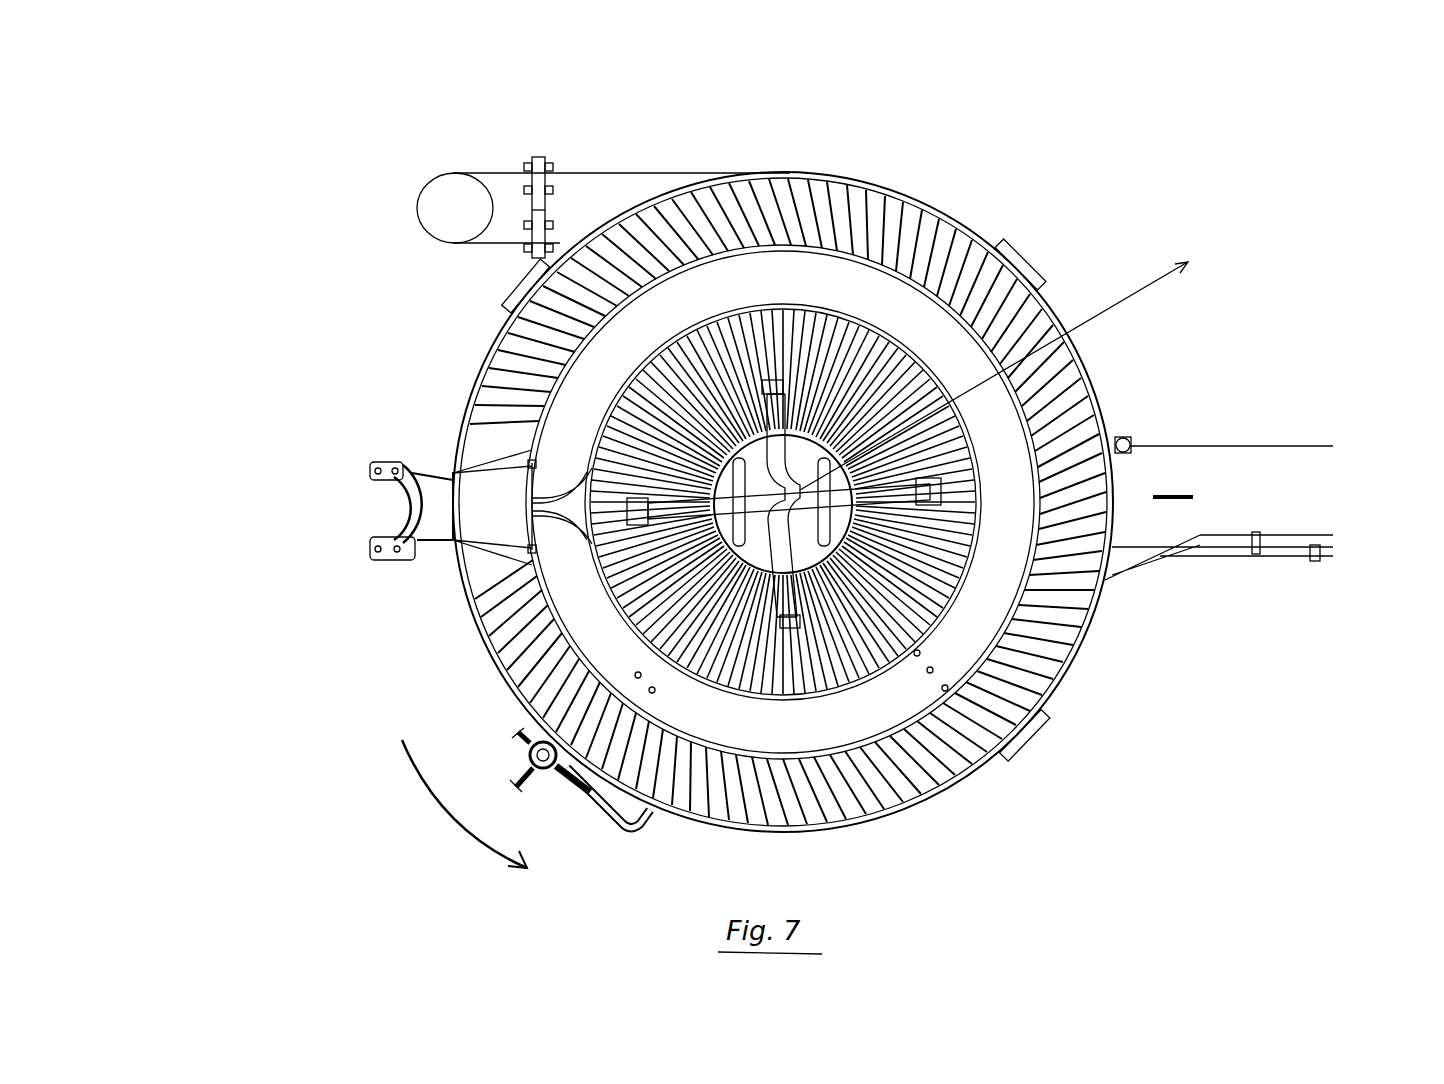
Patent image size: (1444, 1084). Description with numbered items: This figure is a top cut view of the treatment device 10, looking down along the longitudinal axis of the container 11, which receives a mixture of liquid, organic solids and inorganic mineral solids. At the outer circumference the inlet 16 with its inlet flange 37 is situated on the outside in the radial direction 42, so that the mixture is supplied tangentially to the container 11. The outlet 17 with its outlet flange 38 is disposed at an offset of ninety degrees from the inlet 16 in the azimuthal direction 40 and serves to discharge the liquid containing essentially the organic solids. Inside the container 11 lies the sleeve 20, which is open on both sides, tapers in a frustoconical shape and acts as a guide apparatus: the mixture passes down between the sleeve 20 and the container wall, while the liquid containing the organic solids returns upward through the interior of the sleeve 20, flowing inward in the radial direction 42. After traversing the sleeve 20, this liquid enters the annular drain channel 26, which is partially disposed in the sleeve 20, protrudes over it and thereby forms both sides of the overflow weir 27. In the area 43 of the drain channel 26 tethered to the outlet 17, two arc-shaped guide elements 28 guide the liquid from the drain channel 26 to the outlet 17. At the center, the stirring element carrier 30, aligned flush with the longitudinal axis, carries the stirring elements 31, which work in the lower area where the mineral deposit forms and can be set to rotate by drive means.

The treatment device 10 is at (1055, 178).
The container 11 is at (840, 160).
The inlet 16 is at (560, 133).
The outlet 17 is at (365, 580).
The sleeve 20 is at (520, 345).
The drain channel 26 is at (972, 625).
The overflow weir 27 is at (835, 493).
The arc-shaped guide elements 28 is at (532, 505).
The stirring element carrier 30 is at (785, 512).
The stirring elements 31 is at (855, 510).
The inlet flange 37 is at (502, 183).
The outlet flange 38 is at (430, 468).
The azimuthal direction 40 is at (440, 822).
The radial direction 42 is at (1127, 298).
The area of drain channel 43 is at (519, 530).